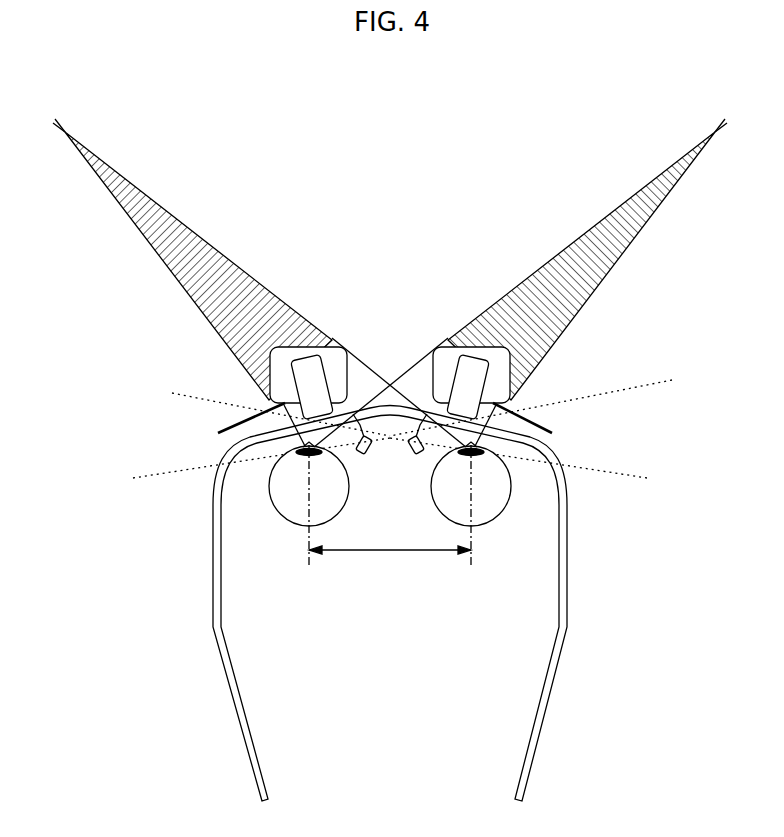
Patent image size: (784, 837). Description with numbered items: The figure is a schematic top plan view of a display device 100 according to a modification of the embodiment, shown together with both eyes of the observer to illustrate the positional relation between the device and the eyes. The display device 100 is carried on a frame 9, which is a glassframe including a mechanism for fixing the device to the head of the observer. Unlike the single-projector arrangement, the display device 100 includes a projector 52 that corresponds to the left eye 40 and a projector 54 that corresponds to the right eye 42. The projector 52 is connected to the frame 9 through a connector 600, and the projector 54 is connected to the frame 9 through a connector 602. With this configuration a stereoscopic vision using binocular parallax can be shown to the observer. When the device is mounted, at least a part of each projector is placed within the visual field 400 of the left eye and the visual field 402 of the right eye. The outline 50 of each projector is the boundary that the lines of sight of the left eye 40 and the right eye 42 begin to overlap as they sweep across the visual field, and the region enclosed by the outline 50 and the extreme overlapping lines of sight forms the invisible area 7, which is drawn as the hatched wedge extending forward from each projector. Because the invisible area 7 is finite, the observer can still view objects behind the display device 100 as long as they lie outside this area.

The invisible area 7 is at (218, 253).
The frame 9 is at (567, 582).
The left eye 40 is at (283, 507).
The right eye 42 is at (495, 507).
The outline of the projector 50 is at (385, 426).
The projector 52 is at (281, 362).
The projector 54 is at (497, 362).
The display device 100 is at (102, 358).
The visual field of the left eye 400 is at (648, 322).
The visual field of the right eye 402 is at (196, 333).
The connector 600 is at (327, 362).
The connector 602 is at (453, 362).